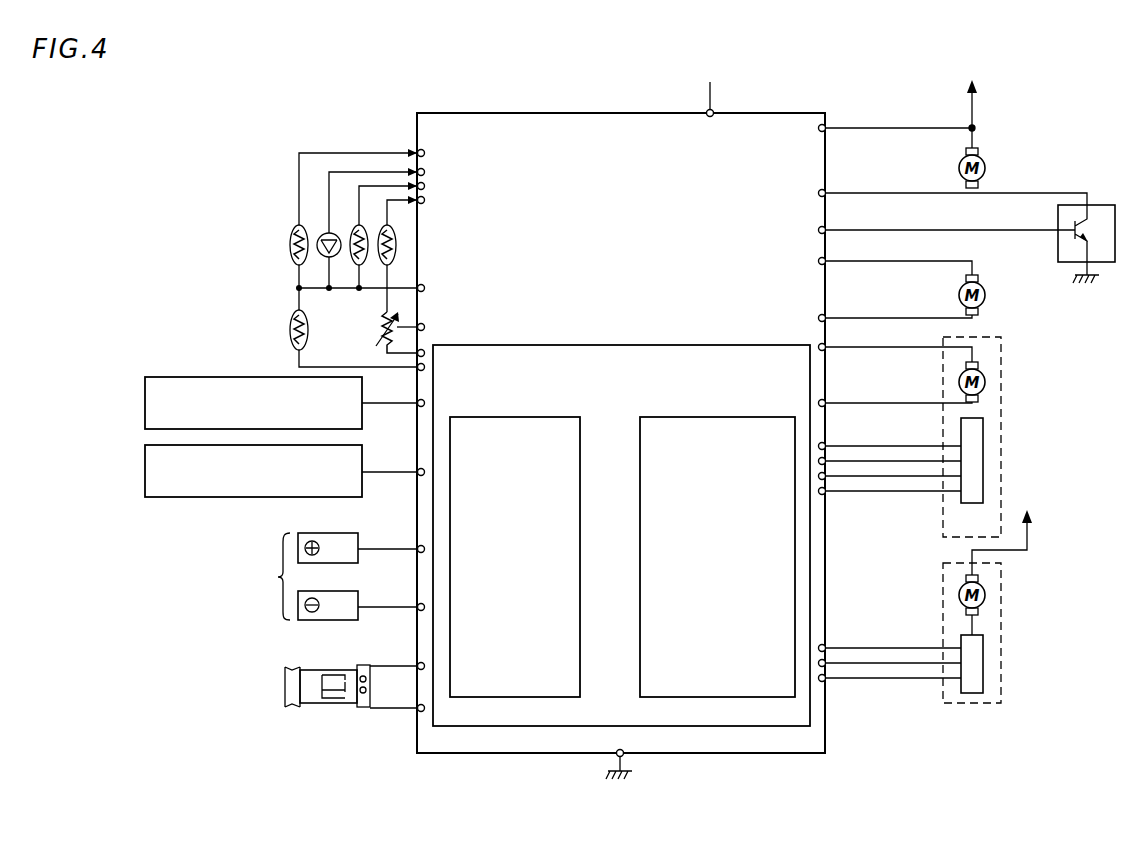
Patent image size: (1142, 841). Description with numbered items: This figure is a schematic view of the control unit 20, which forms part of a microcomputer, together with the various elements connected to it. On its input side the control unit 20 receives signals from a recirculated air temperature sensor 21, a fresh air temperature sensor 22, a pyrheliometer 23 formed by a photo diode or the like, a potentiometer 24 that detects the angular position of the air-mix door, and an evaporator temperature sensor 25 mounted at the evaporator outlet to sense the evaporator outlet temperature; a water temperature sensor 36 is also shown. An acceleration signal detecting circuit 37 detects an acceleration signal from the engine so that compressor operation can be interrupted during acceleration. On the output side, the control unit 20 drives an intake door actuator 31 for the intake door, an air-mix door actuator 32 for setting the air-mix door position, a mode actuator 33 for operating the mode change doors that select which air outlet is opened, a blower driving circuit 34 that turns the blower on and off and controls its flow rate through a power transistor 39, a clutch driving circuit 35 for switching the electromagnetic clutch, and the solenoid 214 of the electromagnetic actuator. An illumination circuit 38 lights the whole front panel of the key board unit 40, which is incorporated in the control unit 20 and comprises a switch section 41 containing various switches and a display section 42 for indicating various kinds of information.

The control unit 20 is at (562, 108).
The recirculated air temperature sensor 21 is at (358, 266).
The fresh air temperature sensor 22 is at (396, 212).
The pyrheliometer 23 is at (319, 261).
The potentiometer 24 is at (378, 335).
The evaporator temperature sensor 25 is at (290, 236).
The intake door actuator 31 is at (1001, 603).
The air-mix door actuator 32 is at (982, 309).
The mode actuator 33 is at (1001, 380).
The blower driving circuit 34 is at (978, 150).
The clutch driving circuit 35 is at (185, 497).
The water temperature sensor 36 is at (290, 329).
The acceleration signal detecting circuit 37 is at (180, 377).
The illumination circuit 38 is at (276, 577).
The power transistor 39 is at (1087, 205).
The key board unit 40 is at (756, 716).
The switch section 41 is at (494, 682).
The display section 42 is at (663, 690).
The solenoid 214 is at (352, 673).